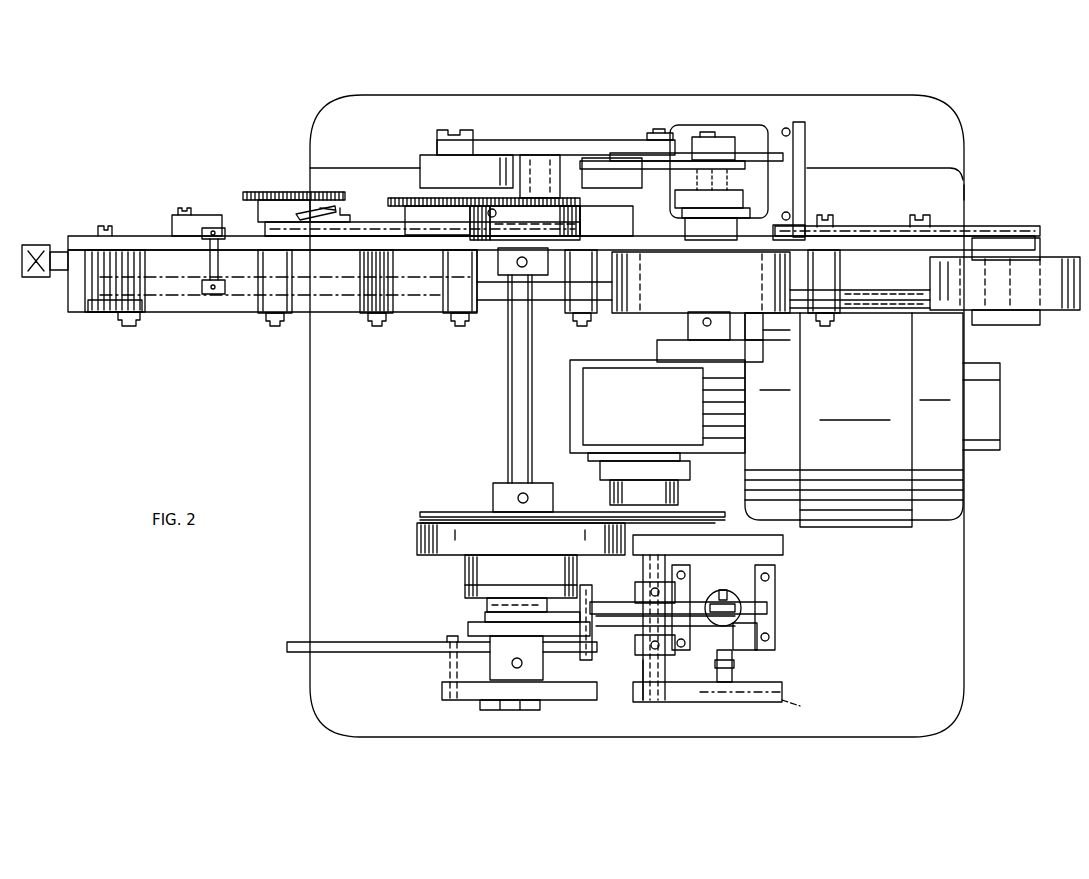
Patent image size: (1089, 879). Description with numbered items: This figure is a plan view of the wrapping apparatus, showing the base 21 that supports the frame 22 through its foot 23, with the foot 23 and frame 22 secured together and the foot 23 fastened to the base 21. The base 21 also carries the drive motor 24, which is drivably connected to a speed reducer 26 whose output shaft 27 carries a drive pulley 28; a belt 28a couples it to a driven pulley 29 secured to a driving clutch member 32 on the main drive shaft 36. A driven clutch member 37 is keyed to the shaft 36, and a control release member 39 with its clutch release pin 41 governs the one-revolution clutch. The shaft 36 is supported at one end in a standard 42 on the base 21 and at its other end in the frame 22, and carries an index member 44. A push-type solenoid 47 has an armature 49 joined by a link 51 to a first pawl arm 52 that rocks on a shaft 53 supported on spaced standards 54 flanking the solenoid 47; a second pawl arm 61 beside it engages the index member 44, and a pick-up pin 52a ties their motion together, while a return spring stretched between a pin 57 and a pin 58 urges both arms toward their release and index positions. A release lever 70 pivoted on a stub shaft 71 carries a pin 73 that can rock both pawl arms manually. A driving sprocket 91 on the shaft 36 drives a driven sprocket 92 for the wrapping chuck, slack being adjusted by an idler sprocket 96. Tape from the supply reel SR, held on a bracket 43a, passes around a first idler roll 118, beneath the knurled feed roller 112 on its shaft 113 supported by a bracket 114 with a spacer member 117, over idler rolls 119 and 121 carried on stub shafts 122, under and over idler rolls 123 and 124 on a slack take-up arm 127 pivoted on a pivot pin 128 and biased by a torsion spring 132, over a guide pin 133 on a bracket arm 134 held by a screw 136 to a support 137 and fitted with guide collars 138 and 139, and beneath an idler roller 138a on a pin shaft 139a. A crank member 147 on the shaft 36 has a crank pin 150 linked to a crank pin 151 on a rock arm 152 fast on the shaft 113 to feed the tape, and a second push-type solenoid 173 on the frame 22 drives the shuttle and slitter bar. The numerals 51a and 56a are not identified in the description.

The base 21 is at (964, 640).
The frame 22 is at (878, 236).
The foot 23 is at (964, 198).
The drive motor 24 is at (862, 527).
The speed reducer 26 is at (652, 436).
The output shaft 27 is at (690, 495).
The drive pulley 28 is at (715, 521).
The belt 28a is at (490, 512).
The driven pulley 29 is at (428, 512).
The driving clutch member 32 is at (417, 540).
The main drive shaft 36 is at (508, 432).
The driven clutch member 37 is at (468, 575).
The control release member 39 is at (465, 588).
The clutch release pin 41 is at (488, 612).
The standard 42 is at (565, 700).
The bracket 43a is at (1012, 238).
The index member 44 is at (468, 629).
The push-type solenoid 47 is at (748, 650).
The armature 49 is at (785, 614).
The link 51 is at (722, 577).
The bracket 51a is at (770, 600).
The first pawl arm 52 is at (605, 600).
The pick-up pin 52a is at (652, 665).
The shaft 53 is at (654, 702).
The standards 54 is at (783, 546).
The lever 56a is at (735, 676).
The pin 57 is at (716, 670).
The pin 58 is at (805, 707).
The second pawl arm 61 is at (612, 632).
The release lever 70 is at (336, 642).
The stub shaft 71 is at (470, 660).
The pin 73 is at (588, 596).
The driving sprocket 91 is at (522, 198).
The driven sprocket 92 is at (292, 192).
The idler sprocket 96 is at (480, 198).
The feed roller 112 is at (660, 295).
The shaft 113 is at (710, 132).
The bracket 114 is at (763, 360).
The spacer member 117 is at (766, 338).
The first idler roll 118 is at (838, 275).
The idler roll 119 is at (568, 318).
The idler roll 121 is at (478, 312).
The stub shafts 122 is at (458, 328).
The idler roll 123 is at (392, 322).
The idler roll 124 is at (290, 320).
The slack take-up arm 127 is at (360, 243).
The pivot pin 128 is at (344, 222).
The torsion spring 132 is at (332, 206).
The guide pin 133 is at (225, 260).
The bracket arm 134 is at (200, 215).
The screw 136 is at (182, 207).
The support 137 is at (158, 230).
The guide collar 138 is at (213, 228).
The idler roller 138a is at (140, 316).
The guide collar 139 is at (212, 296).
The pin shaft 139a is at (126, 326).
The crank member 147 is at (430, 155).
The crank pin 150 is at (466, 133).
The crank pin 151 is at (660, 133).
The rock arm 152 is at (692, 140).
The push-type solenoid 173 is at (752, 130).
The supply reel SR is at (1056, 312).